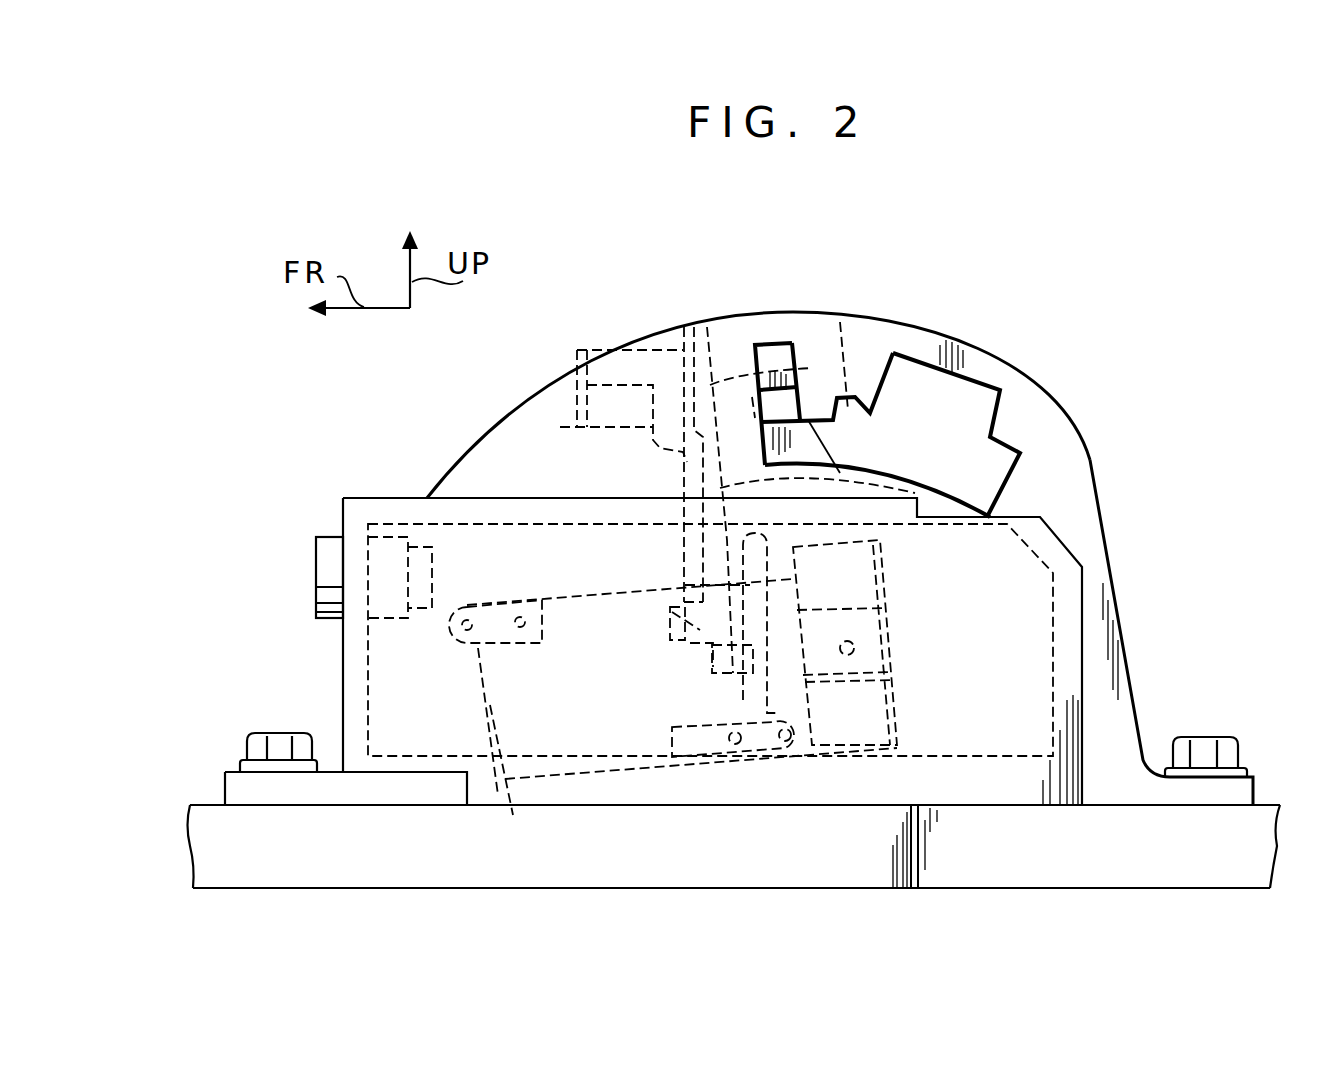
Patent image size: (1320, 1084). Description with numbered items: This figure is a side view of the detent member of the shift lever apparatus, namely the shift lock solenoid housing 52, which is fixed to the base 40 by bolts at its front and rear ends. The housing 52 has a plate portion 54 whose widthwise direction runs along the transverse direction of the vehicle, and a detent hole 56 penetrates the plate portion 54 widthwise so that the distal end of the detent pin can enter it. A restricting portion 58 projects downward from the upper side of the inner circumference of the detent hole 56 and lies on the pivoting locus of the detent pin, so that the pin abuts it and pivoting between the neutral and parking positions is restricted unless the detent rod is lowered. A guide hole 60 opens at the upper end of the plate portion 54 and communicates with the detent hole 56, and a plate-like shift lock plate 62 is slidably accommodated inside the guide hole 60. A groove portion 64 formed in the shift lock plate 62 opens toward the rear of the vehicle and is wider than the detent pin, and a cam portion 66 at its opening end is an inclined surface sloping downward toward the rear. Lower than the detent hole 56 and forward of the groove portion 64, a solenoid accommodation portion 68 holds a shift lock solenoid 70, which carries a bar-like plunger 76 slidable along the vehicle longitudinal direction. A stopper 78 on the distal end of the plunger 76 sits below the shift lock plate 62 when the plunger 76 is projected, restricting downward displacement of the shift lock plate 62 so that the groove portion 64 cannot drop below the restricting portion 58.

The base 40 is at (759, 797).
The shift lock solenoid housing 52 is at (1110, 455).
The plate portion 54 is at (1071, 500).
The detent hole 56 is at (930, 487).
The restricting portion 58 is at (830, 427).
The guide hole 60 is at (712, 350).
The shift lock plate 62 is at (808, 420).
The groove portion 64 is at (800, 393).
The cam portion 66 is at (835, 455).
The solenoid accommodation portion 68 is at (506, 783).
The shift lock solenoid 70 is at (620, 790).
The plunger 76 is at (690, 688).
The stopper 78 is at (697, 713).